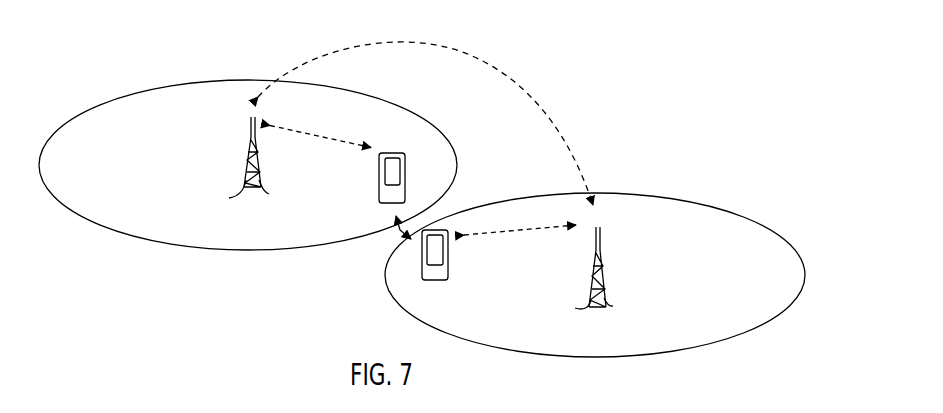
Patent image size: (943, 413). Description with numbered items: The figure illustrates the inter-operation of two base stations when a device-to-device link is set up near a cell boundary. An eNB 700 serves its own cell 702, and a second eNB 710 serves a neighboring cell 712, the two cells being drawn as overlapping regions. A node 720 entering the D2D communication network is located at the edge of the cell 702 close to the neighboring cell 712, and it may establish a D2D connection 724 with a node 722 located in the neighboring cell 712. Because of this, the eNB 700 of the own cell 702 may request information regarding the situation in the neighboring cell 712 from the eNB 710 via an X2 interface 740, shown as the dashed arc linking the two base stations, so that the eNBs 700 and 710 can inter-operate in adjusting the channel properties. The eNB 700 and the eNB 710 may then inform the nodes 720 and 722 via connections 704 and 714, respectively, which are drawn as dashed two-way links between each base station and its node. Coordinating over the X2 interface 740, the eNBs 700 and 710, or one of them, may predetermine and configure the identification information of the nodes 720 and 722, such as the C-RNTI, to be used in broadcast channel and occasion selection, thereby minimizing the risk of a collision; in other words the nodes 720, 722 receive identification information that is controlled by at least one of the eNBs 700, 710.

The eNB 700 is at (268, 184).
The cell 702 is at (139, 131).
The connection 704 is at (300, 129).
The eNB 710 is at (614, 296).
The cell 712 is at (738, 246).
The connection 714 is at (508, 230).
The node 720 is at (407, 163).
The node 722 is at (449, 262).
The D2D connection 724 is at (400, 230).
The X2 interface 740 is at (499, 68).